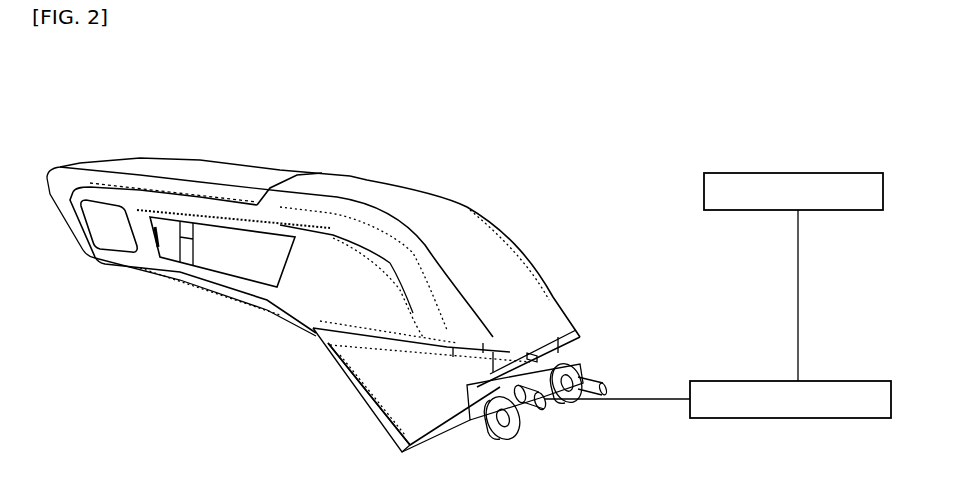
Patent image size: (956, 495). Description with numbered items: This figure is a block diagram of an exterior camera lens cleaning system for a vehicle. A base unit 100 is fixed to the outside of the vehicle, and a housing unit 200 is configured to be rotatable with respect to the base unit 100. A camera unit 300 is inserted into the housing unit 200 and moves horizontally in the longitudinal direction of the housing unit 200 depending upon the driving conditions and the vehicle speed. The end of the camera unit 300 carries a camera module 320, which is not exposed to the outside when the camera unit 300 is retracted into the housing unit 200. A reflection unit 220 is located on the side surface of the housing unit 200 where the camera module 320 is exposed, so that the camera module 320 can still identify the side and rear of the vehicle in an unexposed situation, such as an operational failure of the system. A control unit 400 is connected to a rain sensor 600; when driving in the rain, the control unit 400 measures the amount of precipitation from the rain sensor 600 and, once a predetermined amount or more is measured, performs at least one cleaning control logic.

The base unit 100 is at (413, 382).
The housing unit 200 is at (368, 188).
The reflection unit 220 is at (168, 247).
The camera unit 300 is at (202, 167).
The camera module 320 is at (107, 235).
The control unit 400 is at (853, 381).
The rain sensor 600 is at (704, 191).